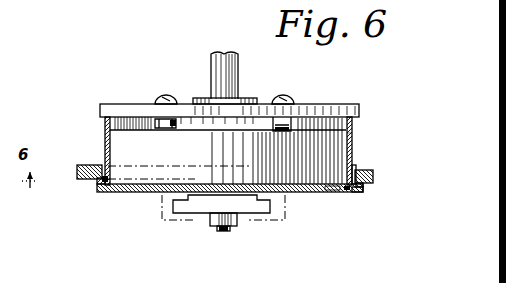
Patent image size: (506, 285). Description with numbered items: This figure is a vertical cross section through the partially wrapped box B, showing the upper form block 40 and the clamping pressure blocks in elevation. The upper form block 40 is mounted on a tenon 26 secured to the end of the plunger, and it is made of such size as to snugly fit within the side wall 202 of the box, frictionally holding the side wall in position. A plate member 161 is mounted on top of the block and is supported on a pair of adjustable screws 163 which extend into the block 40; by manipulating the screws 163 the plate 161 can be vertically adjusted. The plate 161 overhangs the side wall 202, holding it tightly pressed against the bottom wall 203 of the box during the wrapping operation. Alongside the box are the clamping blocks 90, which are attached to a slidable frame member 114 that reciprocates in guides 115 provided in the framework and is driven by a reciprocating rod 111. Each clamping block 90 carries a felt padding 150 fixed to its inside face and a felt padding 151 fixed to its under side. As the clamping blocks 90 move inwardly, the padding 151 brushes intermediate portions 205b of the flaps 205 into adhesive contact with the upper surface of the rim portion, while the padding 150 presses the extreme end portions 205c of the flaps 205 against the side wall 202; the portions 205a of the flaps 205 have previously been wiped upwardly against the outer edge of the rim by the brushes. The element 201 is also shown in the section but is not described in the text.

The tenon 26 is at (211, 62).
The adjustable screws 163 is at (162, 97).
The plate member 161 is at (331, 107).
The side wall 202 is at (105, 142).
The wrapped box B is at (357, 136).
The felt padding 150 is at (357, 168).
The clamping blocks 90 is at (77, 174).
The felt padding 151 is at (364, 184).
The flaps 205 is at (358, 190).
The intermediate portions of the flaps 205b is at (355, 194).
The bottom wall 203 is at (335, 194).
The bottom plate 201 is at (307, 196).
The portions of the flaps 205a is at (97, 186).
The extreme end portions of the flaps 205c is at (108, 178).
The upper form block 40 is at (146, 170).
The guides 115 is at (157, 213).
The slidable frame member 114 is at (202, 207).
The reciprocating rod 111 is at (231, 232).